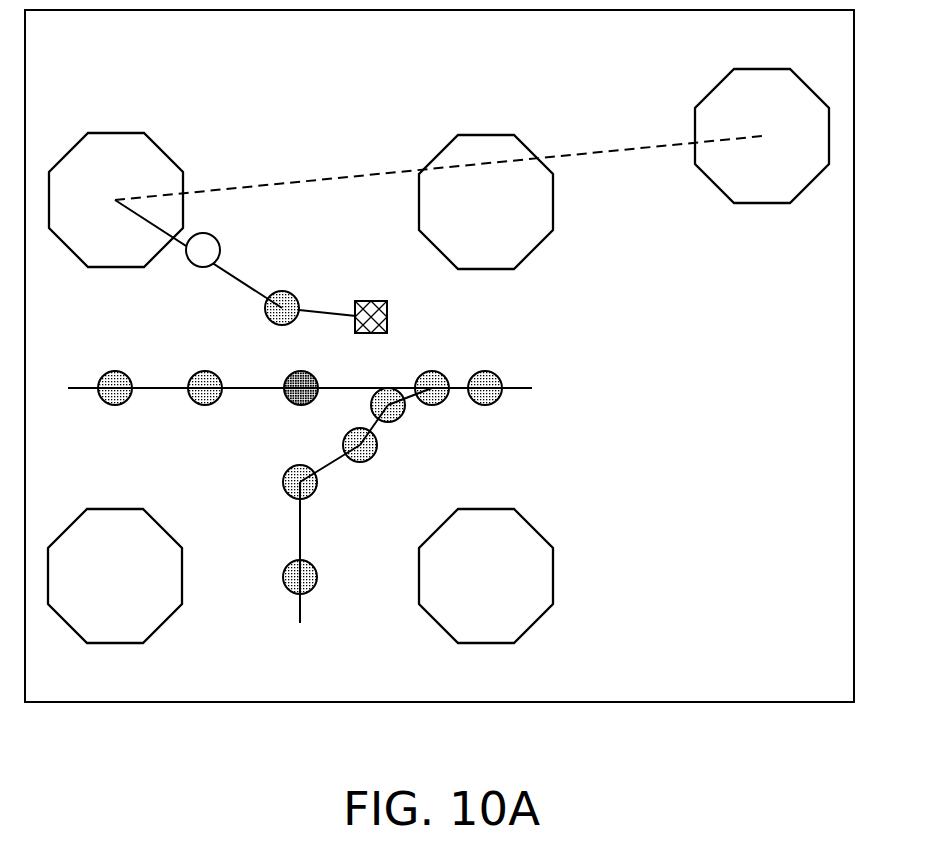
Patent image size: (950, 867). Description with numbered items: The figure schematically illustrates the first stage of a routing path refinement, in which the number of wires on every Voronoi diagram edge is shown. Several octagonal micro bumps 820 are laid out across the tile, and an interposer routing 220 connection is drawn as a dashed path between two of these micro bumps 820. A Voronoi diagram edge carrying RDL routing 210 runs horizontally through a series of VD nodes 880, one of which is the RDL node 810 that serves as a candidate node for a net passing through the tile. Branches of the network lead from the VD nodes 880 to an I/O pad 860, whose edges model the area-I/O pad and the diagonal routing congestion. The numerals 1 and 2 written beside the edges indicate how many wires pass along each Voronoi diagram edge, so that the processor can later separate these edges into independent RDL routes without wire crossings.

The interposer routing 220 is at (283, 182).
The I/O pad 860 is at (387, 317).
The RDL node 810 is at (293, 406).
The RDL routing 210 is at (327, 386).
The VD node 880 is at (283, 577).
The micro bump 820 is at (553, 572).
The trace segment of length 1 is at (273, 374).
The trace segment of length 2 is at (540, 367).